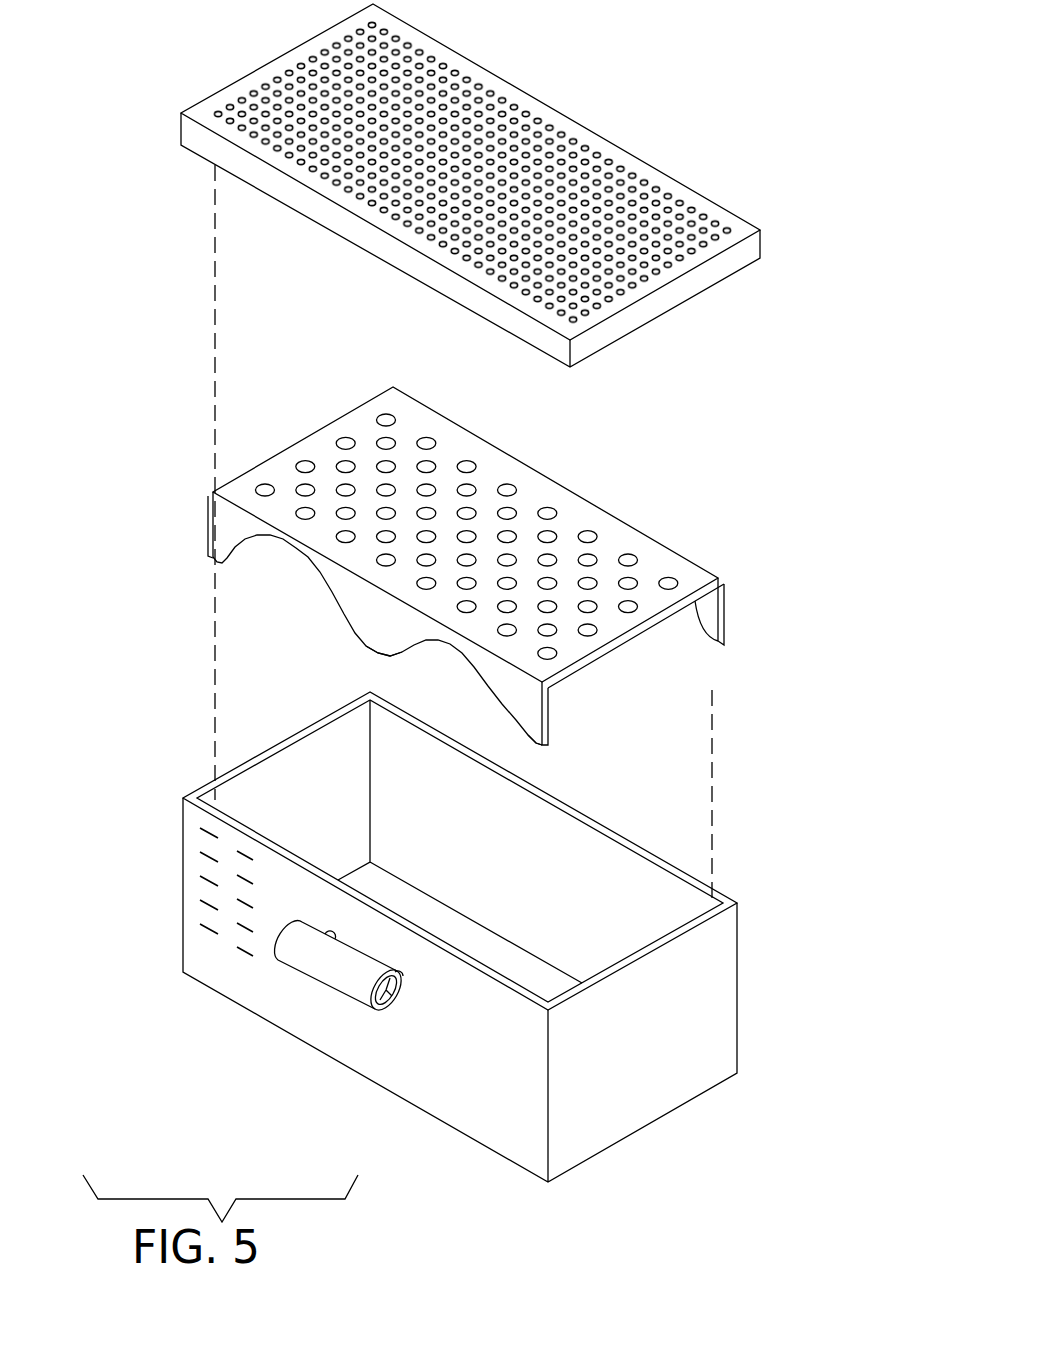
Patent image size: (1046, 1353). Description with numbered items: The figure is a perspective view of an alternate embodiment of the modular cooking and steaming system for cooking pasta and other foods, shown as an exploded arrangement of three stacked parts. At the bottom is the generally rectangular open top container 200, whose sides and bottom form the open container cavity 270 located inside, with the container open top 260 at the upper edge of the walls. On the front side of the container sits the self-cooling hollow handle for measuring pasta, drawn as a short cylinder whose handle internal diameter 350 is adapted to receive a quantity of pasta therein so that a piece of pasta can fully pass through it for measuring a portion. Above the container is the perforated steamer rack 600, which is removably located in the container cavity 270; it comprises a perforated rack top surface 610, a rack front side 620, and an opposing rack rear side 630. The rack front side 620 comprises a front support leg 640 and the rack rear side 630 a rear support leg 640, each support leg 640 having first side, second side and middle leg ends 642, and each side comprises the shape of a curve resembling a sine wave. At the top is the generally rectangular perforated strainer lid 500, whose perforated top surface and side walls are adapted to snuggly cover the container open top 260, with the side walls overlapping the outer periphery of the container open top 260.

The strainer lid 500 is at (640, 158).
The steamer rack 600 is at (468, 631).
The rack top surface 610 is at (693, 573).
The rack front side 620 is at (238, 523).
The rack rear side 630 is at (708, 606).
The support leg 640 is at (377, 627).
The leg end 642 is at (380, 650).
The container 200 is at (441, 952).
The container open top 260 is at (267, 757).
The container cavity 270 is at (530, 970).
The handle internal diameter 350 is at (390, 1013).